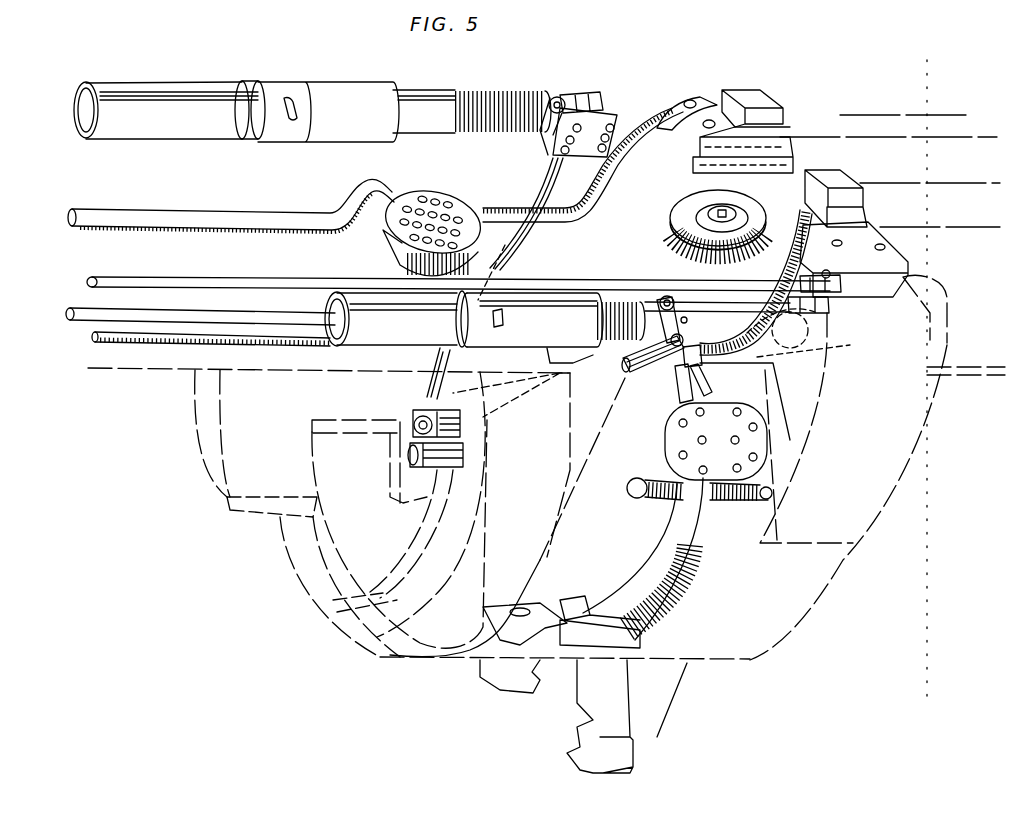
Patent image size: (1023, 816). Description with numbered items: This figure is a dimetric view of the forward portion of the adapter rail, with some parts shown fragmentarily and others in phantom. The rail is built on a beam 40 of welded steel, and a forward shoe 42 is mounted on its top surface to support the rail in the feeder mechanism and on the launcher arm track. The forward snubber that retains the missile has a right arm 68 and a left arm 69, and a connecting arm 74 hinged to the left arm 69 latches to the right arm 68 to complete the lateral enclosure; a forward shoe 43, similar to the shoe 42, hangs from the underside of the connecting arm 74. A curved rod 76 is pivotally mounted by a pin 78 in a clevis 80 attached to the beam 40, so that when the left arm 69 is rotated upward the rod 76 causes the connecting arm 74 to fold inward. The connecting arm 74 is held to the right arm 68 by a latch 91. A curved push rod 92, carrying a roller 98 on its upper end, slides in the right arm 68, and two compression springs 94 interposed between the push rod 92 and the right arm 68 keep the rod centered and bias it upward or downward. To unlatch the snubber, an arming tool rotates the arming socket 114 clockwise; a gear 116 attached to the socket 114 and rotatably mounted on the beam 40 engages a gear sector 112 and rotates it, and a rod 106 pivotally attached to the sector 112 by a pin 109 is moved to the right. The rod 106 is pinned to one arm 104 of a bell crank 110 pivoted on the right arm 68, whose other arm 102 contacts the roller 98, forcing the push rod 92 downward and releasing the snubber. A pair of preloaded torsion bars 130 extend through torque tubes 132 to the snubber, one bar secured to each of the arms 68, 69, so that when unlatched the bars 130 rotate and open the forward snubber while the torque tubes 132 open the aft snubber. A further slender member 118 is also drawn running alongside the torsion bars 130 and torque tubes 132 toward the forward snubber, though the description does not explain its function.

The beam 40 is at (968, 207).
The forward shoe 42 is at (815, 170).
The forward shoe 43 is at (566, 748).
The right arm 68 is at (858, 487).
The left arm 69 is at (252, 393).
The connecting arm 74 is at (315, 551).
The curved rod 76 is at (546, 185).
The pin 78 is at (553, 135).
The clevis 80 is at (570, 93).
The latch 91 is at (560, 622).
The curved push rod 92 is at (710, 402).
The compression springs 94 is at (664, 501).
The roller 98 is at (680, 368).
The arm 102 is at (706, 360).
The arm 104 is at (643, 295).
The rod 106 is at (803, 317).
The pin 109 is at (842, 283).
The bell crank 110 is at (688, 320).
The gear sector 112 is at (773, 240).
The arming socket 114 is at (737, 199).
The gear 116 is at (671, 233).
The rod 118 is at (236, 283).
The torsion bars 130 is at (87, 311).
The torque tubes 132 is at (183, 93).